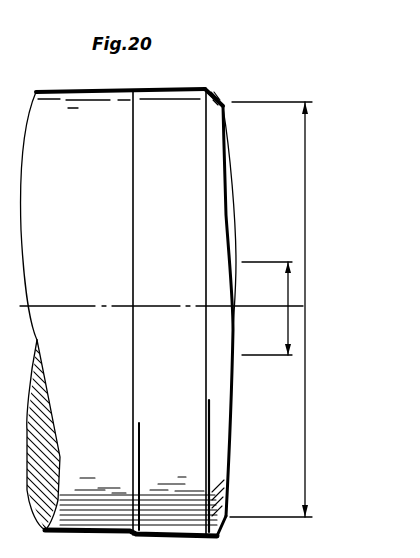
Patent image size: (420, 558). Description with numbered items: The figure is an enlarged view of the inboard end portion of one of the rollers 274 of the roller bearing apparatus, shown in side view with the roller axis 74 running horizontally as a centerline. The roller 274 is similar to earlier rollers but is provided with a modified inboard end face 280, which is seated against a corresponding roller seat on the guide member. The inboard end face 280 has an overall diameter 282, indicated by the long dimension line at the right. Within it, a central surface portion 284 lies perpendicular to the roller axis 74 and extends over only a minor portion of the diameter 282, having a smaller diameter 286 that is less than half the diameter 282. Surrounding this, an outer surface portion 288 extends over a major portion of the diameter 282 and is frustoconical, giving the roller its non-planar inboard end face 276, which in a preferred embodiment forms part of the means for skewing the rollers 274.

The roller axis 74 is at (147, 306).
The roller 274 is at (64, 88).
The non-planar inboard end face 276 is at (181, 89).
The inboard end face 280 is at (244, 256).
The outer surface portion 288 is at (232, 172).
The central surface portion 284 is at (236, 287).
The diameter of central surface portion 286 is at (305, 307).
The diameter of inboard end face 282 is at (306, 330).